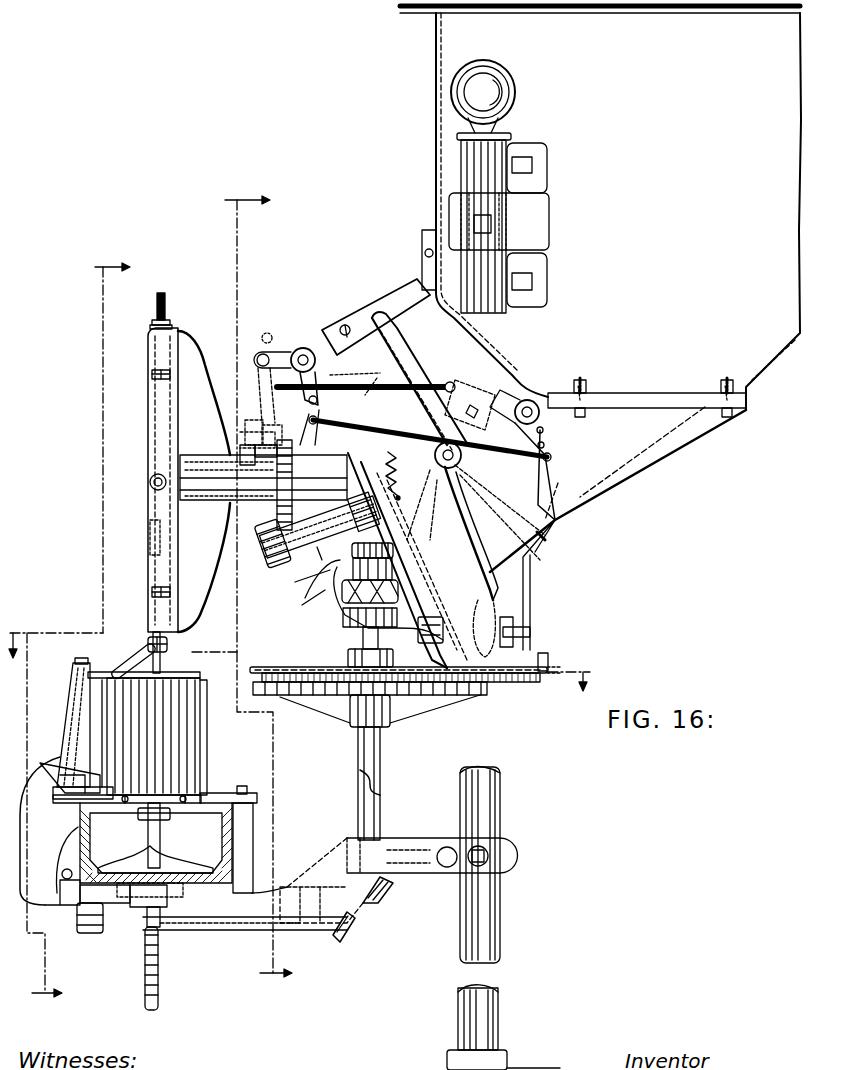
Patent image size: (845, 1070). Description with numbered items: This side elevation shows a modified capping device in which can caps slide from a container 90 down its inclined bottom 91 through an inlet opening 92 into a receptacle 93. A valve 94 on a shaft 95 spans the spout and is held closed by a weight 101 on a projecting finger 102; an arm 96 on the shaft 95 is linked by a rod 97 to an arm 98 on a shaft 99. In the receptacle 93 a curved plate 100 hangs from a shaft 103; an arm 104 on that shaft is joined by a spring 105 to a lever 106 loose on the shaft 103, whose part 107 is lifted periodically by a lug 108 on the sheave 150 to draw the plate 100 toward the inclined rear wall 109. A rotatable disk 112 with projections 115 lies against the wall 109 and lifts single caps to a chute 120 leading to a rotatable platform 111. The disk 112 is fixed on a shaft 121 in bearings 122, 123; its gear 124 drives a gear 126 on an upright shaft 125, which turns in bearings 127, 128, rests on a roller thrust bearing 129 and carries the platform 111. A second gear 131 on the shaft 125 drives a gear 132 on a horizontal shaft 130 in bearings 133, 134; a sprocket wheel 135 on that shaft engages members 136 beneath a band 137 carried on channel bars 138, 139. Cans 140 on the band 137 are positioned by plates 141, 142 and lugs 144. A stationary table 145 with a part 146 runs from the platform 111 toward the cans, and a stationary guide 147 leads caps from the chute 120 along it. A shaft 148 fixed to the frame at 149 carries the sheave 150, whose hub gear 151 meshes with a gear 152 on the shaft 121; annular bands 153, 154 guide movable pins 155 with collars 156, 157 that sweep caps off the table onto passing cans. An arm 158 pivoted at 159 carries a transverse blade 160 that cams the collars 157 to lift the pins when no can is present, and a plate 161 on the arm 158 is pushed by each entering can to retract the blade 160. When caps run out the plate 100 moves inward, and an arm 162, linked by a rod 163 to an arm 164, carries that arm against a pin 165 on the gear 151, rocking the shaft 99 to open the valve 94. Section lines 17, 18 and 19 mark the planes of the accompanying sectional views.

The container 90 is at (718, 343).
The inclined bottom 91 is at (667, 443).
The inlet opening 92 is at (590, 442).
The receptacle 93 is at (490, 622).
The valve 94 is at (558, 483).
The shaft 95 is at (553, 413).
The arm 96 is at (582, 395).
The rod 97 is at (400, 427).
The arm 98 is at (340, 325).
The shaft 99 is at (303, 348).
The curved plate 100 is at (543, 577).
The weight 101 is at (495, 407).
The projecting finger 102 is at (500, 427).
The shaft 103 is at (550, 522).
The arm 104 is at (547, 537).
The spring 105 is at (547, 547).
The lever 106 is at (245, 437).
The connecting part 107 is at (245, 440).
The lug 108 is at (245, 450).
The rear wall 109 is at (437, 593).
The rotatable platform 111 is at (510, 690).
The rotatable disk 112 is at (347, 325).
The projections 115 is at (540, 658).
The chute 120 is at (455, 690).
The shaft 121 is at (302, 605).
The bearing 122 is at (295, 582).
The bearing 123 is at (337, 567).
The gear 124 is at (317, 547).
The upright shaft 125 is at (381, 752).
The gear 126 is at (348, 575).
The bearing 127 is at (352, 610).
The bearing 128 is at (378, 858).
The roller thrust bearing 129 is at (447, 640).
The horizontal shaft 130 is at (185, 922).
The second gear 131 is at (382, 895).
The gear 132 is at (345, 935).
The bearing 133 is at (287, 885).
The bearing 134 is at (90, 935).
The sprocket wheel 135 is at (160, 990).
The engaging members 136 is at (165, 820).
The flexible band or belt 137 is at (175, 795).
The channel bar 138 is at (62, 876).
The channel bar 139 is at (270, 860).
The cans 140 is at (115, 713).
The plate 141 is at (72, 730).
The plate 142 is at (240, 786).
The lugs or projections 144 is at (165, 790).
The stationary table 145 is at (202, 720).
The table part 146 is at (112, 670).
The stationary guide 147 is at (460, 700).
The shaft 148 is at (150, 482).
The frame mounting 149 is at (225, 450).
The sheave 150 is at (155, 352).
The gear 151 is at (280, 520).
The gear 152 is at (280, 555).
The annular band 153 is at (145, 550).
The annular band 154 is at (150, 327).
The pins or bars 155 is at (155, 300).
The collar 156 is at (152, 375).
The collar 157 is at (155, 321).
The arm 158 is at (55, 848).
The pivot 159 is at (65, 898).
The transverse blade 160 is at (148, 645).
The plate 161 is at (65, 770).
The arm 162 is at (448, 407).
The rod 163 is at (397, 387).
The arm 164 is at (273, 423).
The pin 165 is at (245, 450).
The section line 17 is at (78, 635).
The section line 18 is at (263, 593).
The section line 19 is at (304, 649).